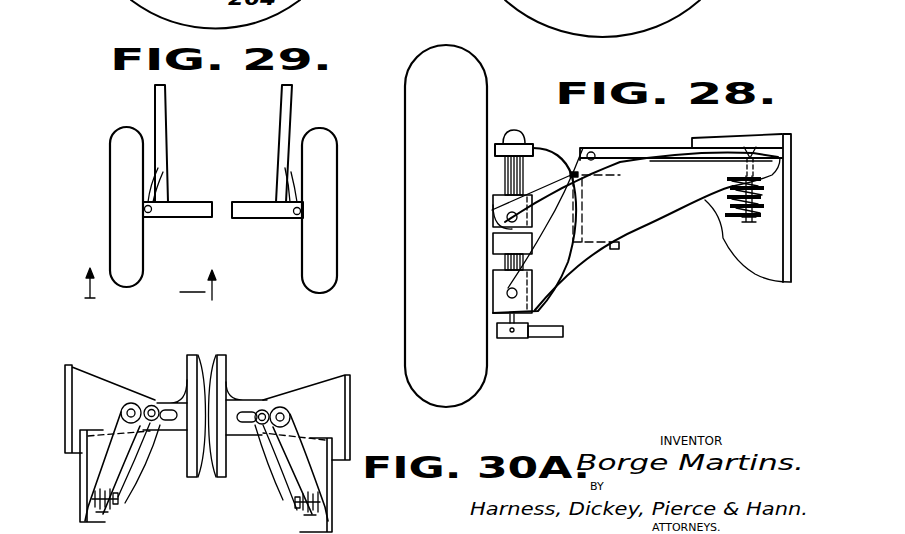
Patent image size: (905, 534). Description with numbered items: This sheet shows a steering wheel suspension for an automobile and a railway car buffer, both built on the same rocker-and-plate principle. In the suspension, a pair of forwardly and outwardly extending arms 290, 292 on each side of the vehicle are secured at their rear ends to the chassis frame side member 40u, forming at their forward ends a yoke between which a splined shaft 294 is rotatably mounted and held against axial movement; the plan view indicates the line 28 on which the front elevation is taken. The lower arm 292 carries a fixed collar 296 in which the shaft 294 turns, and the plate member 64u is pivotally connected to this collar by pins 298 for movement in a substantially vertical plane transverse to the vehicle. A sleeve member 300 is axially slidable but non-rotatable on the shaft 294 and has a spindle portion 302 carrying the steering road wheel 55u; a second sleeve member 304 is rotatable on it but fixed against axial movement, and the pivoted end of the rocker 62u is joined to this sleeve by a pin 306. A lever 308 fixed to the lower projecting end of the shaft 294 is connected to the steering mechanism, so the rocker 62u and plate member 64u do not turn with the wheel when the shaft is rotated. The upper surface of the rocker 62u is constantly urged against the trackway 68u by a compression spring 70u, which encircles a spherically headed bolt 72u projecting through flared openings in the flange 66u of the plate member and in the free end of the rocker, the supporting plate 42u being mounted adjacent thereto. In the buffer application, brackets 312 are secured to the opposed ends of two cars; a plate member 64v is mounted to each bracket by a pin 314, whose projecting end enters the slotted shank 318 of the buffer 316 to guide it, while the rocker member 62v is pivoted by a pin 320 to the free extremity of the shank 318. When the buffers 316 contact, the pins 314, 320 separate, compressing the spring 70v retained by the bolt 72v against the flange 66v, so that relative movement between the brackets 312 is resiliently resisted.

In FIG. 29, the section line 28— 28 is at (147, 274).
In FIG. 29, the chassis frame side member 40u is at (156, 95).
In FIG. 28, the mounting plate 42u is at (748, 208).
In FIG. 29, the steering road wheel 55u is at (118, 220).
In FIG. 28, the steering road wheel 55u is at (444, 28).
In FIG. 28, the rocker 62u is at (590, 218).
In FIG. 28, the plate member 64u is at (642, 231).
In FIG. 28, the flange 66u is at (602, 152).
In FIG. 28, the trackway 68u is at (591, 153).
In FIG. 28, the compression spring 70u is at (725, 192).
In FIG. 28, the spherically headed bolt 72u is at (750, 157).
In FIG. 28, the arm 290 is at (556, 298).
In FIG. 29, the lower arm 292 is at (152, 192).
In FIG. 28, the lower arm 292 is at (536, 145).
In FIG. 28, the splined shaft 294 is at (505, 160).
In FIG. 28, the collar 296 is at (500, 273).
In FIG. 28, the pins 298 is at (500, 280).
In FIG. 28, the sleeve member 300 is at (506, 249).
In FIG. 28, the spindle portion 302 is at (494, 245).
In FIG. 28, the second sleeve member 304 is at (507, 216).
In FIG. 28, the pin 306 is at (510, 203).
In FIG. 28, the lever 308 is at (548, 338).
In FIG. 30A, the bracket 312 is at (72, 410).
In FIG. 30A, the pin 314 is at (149, 405).
In FIG. 30A, the buffer 316 is at (213, 355).
In FIG. 30A, the slotted shank 318 is at (168, 397).
In FIG. 30A, the pin 320 is at (126, 408).
In FIG. 30A, the rocker member 62v is at (120, 440).
In FIG. 30A, the plate member 64v is at (117, 473).
In FIG. 30A, the flange 66v is at (80, 472).
In FIG. 30A, the spring 70v is at (103, 513).
In FIG. 30A, the bolt 72v is at (92, 500).